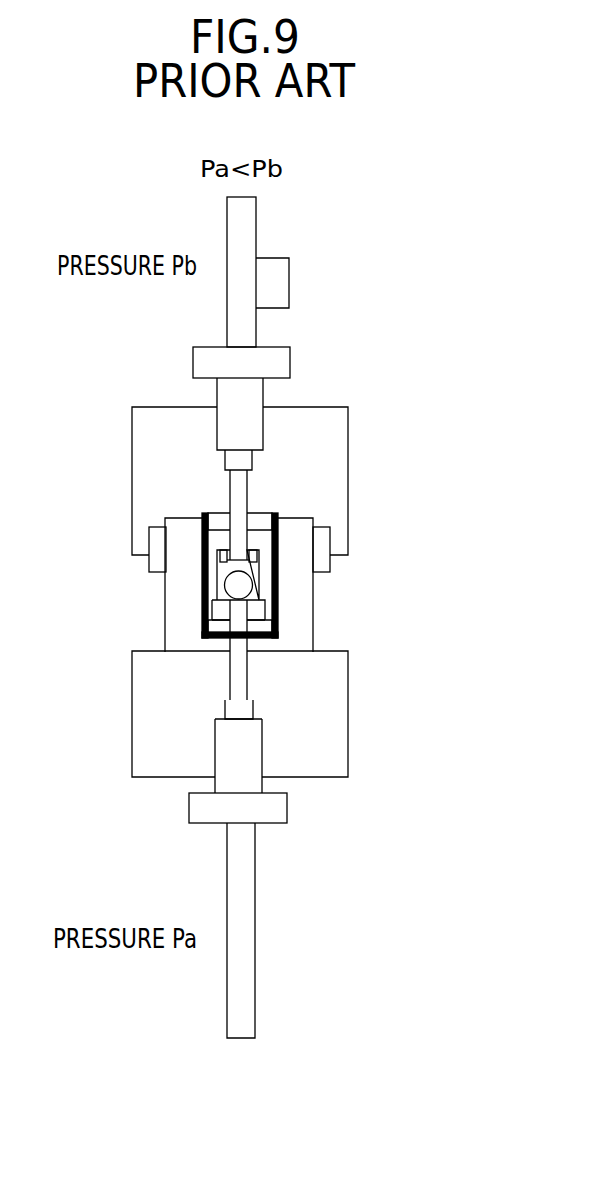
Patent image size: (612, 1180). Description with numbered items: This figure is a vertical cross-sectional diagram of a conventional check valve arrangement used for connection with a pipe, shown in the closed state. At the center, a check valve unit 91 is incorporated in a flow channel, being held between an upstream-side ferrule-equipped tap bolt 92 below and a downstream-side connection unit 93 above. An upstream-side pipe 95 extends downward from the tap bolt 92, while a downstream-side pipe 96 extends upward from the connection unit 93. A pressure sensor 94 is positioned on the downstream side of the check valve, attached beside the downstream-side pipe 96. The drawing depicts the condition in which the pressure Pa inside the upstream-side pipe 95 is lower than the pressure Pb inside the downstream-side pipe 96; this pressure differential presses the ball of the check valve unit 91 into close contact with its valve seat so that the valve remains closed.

The check valve unit 91 is at (345, 720).
The upstream-side ferrule-equipped tap bolt 92 is at (287, 810).
The downstream-side connection unit 93 is at (347, 472).
The pressure sensor 94 is at (289, 280).
The upstream-side pipe 95 is at (255, 912).
The downstream-side pipe 96 is at (256, 210).